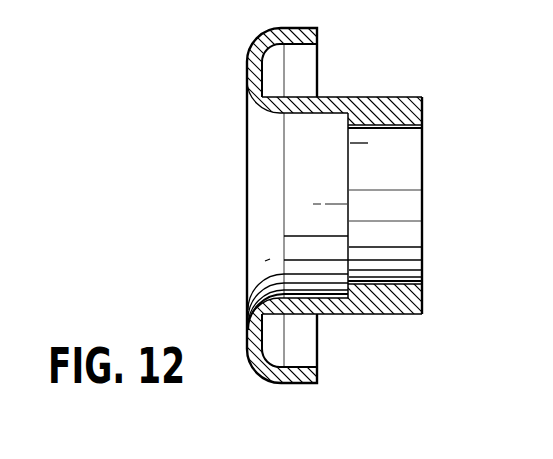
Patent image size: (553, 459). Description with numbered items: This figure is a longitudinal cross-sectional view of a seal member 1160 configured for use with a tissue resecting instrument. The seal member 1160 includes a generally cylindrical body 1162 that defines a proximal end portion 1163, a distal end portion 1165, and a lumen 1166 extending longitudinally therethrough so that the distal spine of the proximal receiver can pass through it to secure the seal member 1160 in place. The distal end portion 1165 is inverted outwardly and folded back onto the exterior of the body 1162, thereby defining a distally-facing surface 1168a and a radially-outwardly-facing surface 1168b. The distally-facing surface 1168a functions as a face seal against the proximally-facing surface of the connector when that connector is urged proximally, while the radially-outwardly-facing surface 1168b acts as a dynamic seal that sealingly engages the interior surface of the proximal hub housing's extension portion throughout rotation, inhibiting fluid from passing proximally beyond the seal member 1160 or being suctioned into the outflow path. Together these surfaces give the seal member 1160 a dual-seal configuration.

The seal member 1160 is at (425, 329).
The body 1162 is at (381, 97).
The proximal end portion 1163 is at (424, 113).
The distal end portion 1165 is at (259, 294).
The lumen 1166 is at (340, 217).
The distally-facing surface 1168a is at (247, 62).
The radially-outwardly-facing surface 1168b is at (293, 389).